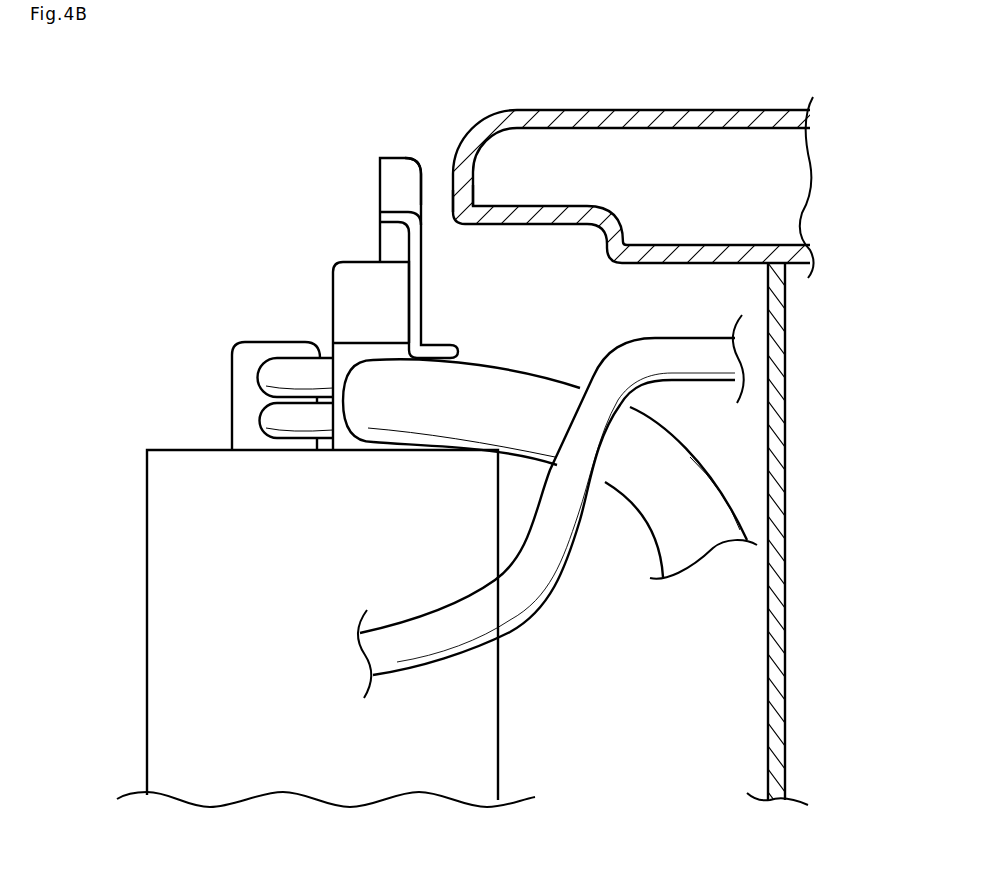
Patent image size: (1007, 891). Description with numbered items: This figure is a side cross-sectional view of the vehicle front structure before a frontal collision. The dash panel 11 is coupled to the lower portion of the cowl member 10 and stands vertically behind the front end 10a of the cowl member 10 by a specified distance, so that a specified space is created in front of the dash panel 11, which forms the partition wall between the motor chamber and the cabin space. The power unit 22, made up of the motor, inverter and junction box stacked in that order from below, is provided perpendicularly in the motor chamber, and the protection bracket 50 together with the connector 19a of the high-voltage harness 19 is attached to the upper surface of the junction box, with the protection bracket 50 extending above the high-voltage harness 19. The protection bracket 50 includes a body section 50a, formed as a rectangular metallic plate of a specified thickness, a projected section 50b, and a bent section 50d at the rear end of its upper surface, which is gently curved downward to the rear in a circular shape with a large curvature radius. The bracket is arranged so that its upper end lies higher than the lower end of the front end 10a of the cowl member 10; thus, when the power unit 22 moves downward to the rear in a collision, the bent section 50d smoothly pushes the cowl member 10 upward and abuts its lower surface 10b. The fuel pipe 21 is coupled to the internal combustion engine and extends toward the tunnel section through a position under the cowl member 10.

The cowl member 10 is at (607, 169).
The front end of the cowl member 10a is at (461, 226).
The lower surface of the cowl member 10b is at (552, 217).
The dash panel 11 is at (788, 620).
The high-voltage harness 19 is at (496, 432).
The connector of the high-voltage harness 19a is at (352, 360).
The fuel pipe 21 is at (530, 577).
The power unit 22 is at (145, 593).
The protection bracket 50 is at (397, 233).
The body section 50a is at (423, 305).
The projected section 50b is at (397, 182).
The bent section 50d is at (421, 161).